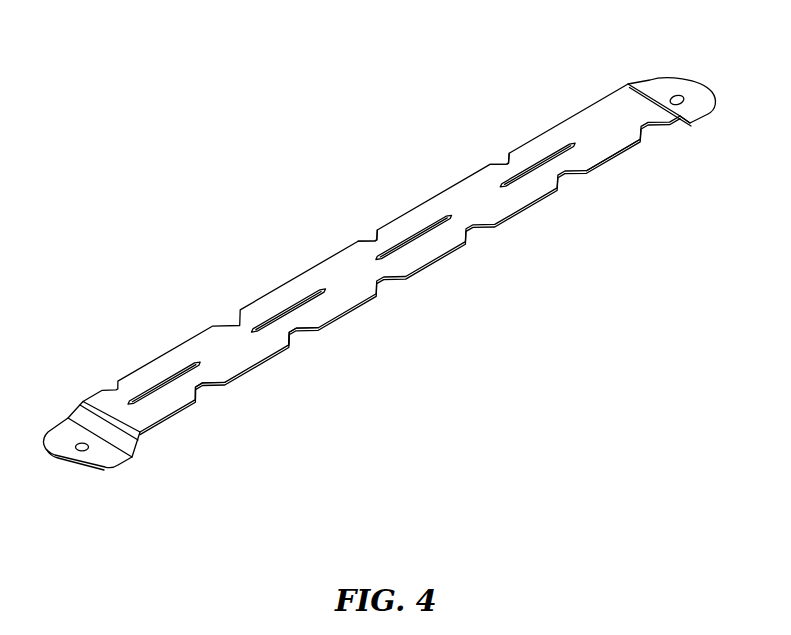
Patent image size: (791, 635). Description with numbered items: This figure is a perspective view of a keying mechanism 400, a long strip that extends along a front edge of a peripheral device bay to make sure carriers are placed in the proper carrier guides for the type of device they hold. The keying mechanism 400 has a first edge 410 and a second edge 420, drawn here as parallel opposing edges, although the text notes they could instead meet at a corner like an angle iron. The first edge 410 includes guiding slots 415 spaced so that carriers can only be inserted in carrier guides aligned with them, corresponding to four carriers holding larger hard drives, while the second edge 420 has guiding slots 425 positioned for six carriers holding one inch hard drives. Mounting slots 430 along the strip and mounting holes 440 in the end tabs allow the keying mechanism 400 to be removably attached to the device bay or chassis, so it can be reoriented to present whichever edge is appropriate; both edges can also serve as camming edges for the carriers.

The keying mechanism 400 is at (235, 132).
The first edge 410 is at (571, 112).
The guiding slots 415 is at (492, 148).
The second edge 420 is at (622, 153).
The guiding slots 425 is at (231, 392).
The mounting slots 430 is at (191, 363).
The mounting holes 440 is at (78, 443).